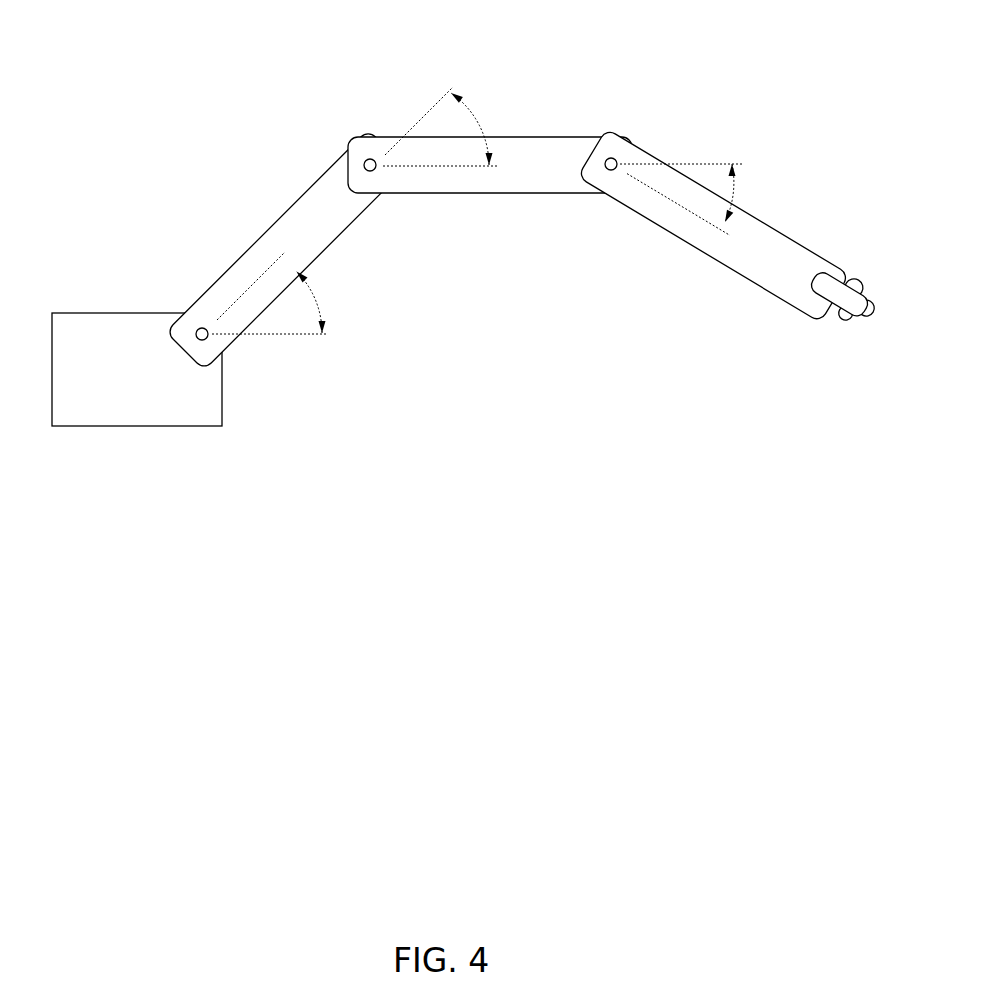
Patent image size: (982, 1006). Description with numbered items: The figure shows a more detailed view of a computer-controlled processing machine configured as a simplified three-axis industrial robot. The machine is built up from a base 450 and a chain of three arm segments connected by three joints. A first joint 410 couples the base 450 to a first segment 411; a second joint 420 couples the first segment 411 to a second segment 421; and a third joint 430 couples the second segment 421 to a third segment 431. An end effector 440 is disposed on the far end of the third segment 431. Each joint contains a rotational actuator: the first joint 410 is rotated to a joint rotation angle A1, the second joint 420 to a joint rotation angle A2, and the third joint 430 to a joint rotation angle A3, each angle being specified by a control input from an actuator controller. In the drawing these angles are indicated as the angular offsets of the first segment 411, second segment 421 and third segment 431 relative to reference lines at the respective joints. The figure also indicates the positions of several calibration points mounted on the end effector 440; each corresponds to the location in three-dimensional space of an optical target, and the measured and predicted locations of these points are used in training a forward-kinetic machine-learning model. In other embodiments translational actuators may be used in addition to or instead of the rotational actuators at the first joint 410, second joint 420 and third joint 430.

The first joint 410 is at (232, 370).
The first segment 411 is at (334, 231).
The second joint 420 is at (340, 124).
The second segment 421 is at (557, 176).
The third joint 430 is at (622, 120).
The third segment 431 is at (792, 271).
The end effector 440 is at (782, 305).
The base 450 is at (158, 395).
The joint rotation angle A1 is at (312, 292).
The joint rotation angle A2 is at (480, 128).
The joint rotation angle A3 is at (733, 195).